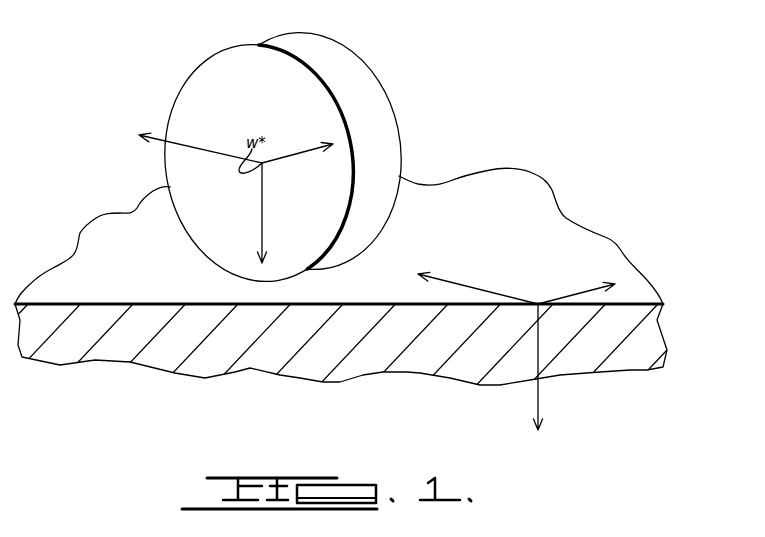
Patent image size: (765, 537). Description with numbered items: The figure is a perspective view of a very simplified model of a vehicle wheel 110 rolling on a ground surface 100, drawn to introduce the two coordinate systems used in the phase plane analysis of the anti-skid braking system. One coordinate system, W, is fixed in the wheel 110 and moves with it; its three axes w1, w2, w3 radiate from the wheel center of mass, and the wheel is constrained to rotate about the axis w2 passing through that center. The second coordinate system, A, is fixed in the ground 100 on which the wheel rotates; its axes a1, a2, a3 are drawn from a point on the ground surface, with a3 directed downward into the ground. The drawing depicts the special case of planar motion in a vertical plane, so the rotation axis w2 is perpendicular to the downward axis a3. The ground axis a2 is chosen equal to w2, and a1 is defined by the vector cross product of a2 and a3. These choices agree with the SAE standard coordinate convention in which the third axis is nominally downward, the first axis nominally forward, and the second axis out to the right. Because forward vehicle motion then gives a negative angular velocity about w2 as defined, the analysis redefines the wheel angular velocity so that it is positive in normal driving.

The ground surface / terrain 100 is at (131, 304).
The wheel rim 110 is at (370, 67).
The wheel coordinate system W is at (259, 163).
The ground coordinate system A is at (355, 361).
The first wheel axis w1 is at (150, 130).
The wheel rotation axis w2 is at (305, 145).
The third wheel axis w3 is at (297, 247).
The forward ground axis a1 is at (440, 275).
The lateral ground axis a2 is at (589, 287).
The downward ground axis a3 is at (536, 404).